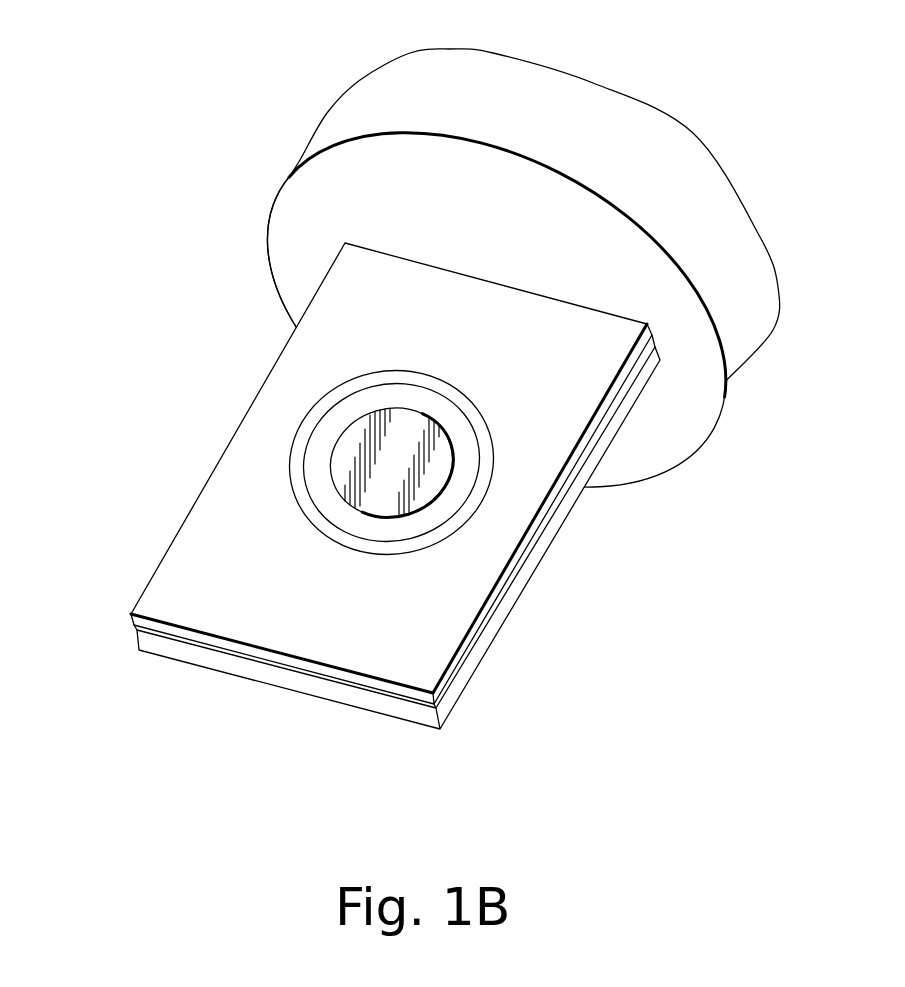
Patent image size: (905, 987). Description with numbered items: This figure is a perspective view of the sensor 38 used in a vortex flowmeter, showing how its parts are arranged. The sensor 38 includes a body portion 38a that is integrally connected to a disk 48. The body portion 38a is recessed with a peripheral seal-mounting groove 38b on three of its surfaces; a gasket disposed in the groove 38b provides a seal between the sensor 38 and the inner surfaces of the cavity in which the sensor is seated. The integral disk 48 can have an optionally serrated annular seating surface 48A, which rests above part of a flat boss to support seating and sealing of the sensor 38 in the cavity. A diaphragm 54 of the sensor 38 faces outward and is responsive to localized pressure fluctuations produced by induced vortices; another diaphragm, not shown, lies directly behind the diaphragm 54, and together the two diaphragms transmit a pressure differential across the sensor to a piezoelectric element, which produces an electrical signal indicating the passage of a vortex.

The disk 48 is at (673, 137).
The serrated annular seating surface 48A is at (297, 232).
The sensor 38 is at (334, 507).
The body portion 38a is at (209, 457).
The groove 38b is at (407, 707).
The diaphragm 54 is at (357, 427).